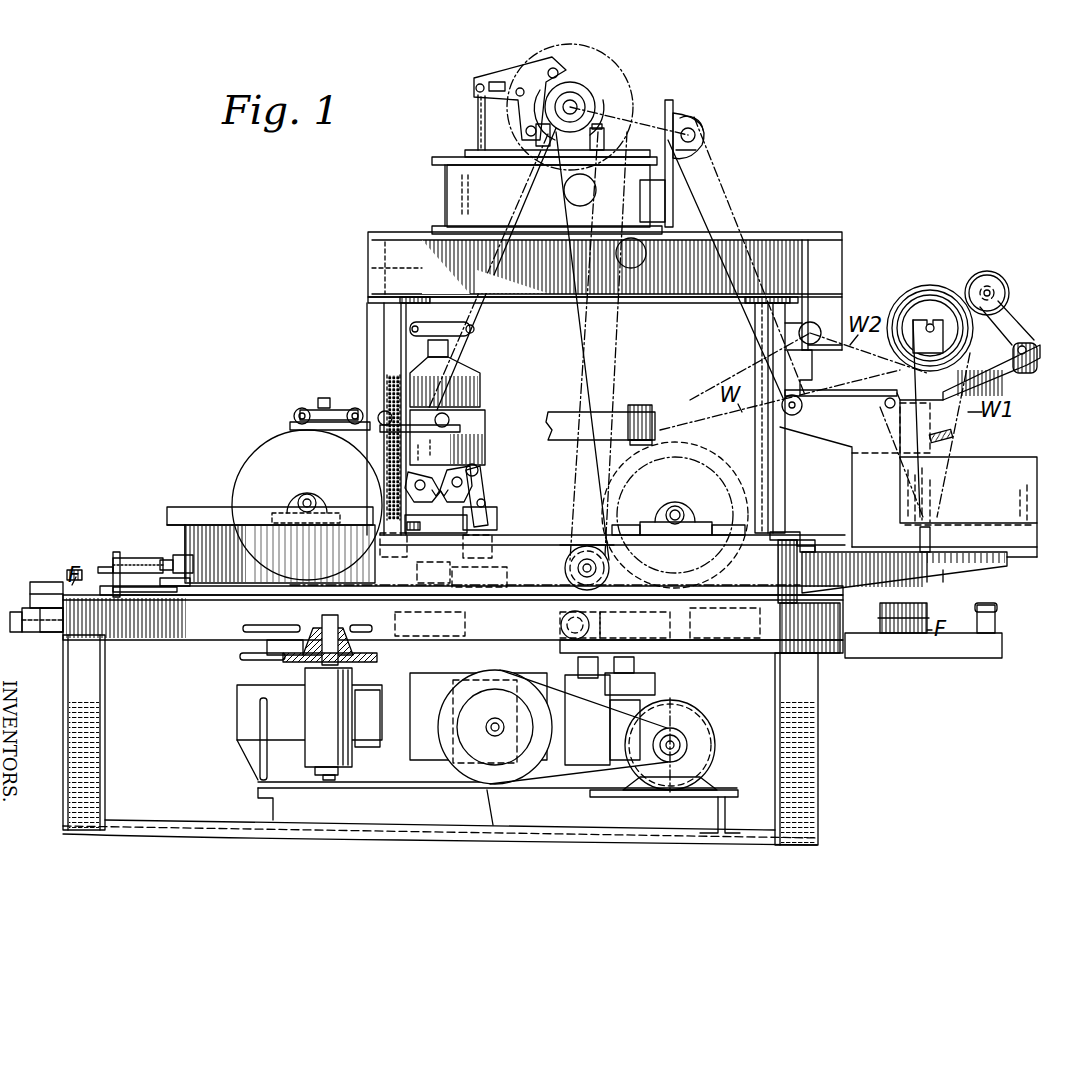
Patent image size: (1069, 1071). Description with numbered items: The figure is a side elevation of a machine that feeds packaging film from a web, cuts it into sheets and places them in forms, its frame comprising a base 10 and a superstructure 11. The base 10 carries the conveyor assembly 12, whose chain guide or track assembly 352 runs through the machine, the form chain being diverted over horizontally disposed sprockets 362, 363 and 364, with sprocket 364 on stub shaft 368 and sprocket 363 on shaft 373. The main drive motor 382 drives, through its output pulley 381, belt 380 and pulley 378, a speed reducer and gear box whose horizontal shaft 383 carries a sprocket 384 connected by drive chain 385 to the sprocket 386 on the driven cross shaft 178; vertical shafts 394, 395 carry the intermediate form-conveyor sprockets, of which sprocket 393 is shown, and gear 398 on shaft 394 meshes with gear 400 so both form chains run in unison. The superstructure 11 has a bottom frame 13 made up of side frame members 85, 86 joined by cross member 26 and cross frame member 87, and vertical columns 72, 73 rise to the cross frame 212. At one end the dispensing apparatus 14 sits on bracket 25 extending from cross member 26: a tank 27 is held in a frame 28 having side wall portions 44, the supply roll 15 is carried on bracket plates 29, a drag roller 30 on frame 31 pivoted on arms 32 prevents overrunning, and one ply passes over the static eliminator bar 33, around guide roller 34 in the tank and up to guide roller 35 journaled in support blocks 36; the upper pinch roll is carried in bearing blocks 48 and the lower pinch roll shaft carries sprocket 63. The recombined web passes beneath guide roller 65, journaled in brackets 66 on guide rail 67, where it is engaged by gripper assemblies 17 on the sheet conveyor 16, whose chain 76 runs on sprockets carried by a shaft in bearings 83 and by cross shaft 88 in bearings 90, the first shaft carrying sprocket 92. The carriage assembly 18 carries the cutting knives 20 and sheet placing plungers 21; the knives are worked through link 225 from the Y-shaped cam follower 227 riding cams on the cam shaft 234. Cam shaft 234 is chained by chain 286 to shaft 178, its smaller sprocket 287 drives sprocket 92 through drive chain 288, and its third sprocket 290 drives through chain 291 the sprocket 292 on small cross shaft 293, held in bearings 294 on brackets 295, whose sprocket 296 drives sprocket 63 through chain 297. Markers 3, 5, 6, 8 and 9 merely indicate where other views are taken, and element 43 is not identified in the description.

The pad 3 is at (928, 610).
The bolt 5 is at (997, 630).
The section line 6 is at (702, 62).
The section line 8 is at (221, 408).
The section line 9 is at (66, 553).
The base 10 is at (820, 690).
The superstructure 11 is at (386, 230).
The conveyor assembly 12 is at (25, 604).
The bottom frame 13 is at (830, 590).
The dispensing apparatus 14 is at (899, 300).
The supply roll 15 is at (924, 300).
The endless conveyor mechanism 16 is at (254, 461).
The web gripper assemblies 17 is at (318, 402).
The carriage assembly 18 is at (498, 487).
The cutting knives 20 is at (490, 412).
The sheet placing plungers 21 is at (452, 577).
The bracket 25 is at (955, 587).
The cross member 26 is at (803, 538).
The tank 27 is at (1021, 460).
The frame 28 is at (1022, 560).
The bracket plates 29 is at (893, 387).
The drag roller 30 is at (981, 282).
The frame 31 is at (1012, 328).
The horizontal arms 32 is at (1003, 374).
The static eliminator bar 33 is at (950, 438).
The guide roller 34 is at (967, 495).
The guide roller 35 is at (898, 434).
The support blocks 36 is at (971, 372).
The roller 43 is at (883, 408).
The side wall portions 44 is at (856, 475).
The bearing forming blocks 48 is at (800, 385).
The sprocket 63 is at (802, 410).
The guide roller 65 is at (652, 418).
The bearing forming brackets 66 is at (640, 405).
The guide rail 67 is at (735, 440).
The vertical column 72 is at (775, 488).
The vertical column 73 is at (393, 320).
The endless chain 76 is at (522, 592).
The bearing 83 is at (695, 510).
The side frame member 85 is at (280, 554).
The side frame member 86 is at (676, 509).
The cross frame member 87 is at (182, 538).
The cross shaft 88 is at (309, 495).
The bearing 90 is at (294, 499).
The sprocket 92 is at (733, 560).
The driven cross shaft 178 is at (598, 572).
The cross frame 212 is at (445, 184).
The link 225 is at (478, 117).
The cam follower 227 is at (500, 82).
The cam shaft 234 is at (571, 105).
The chain 286 is at (582, 368).
The smaller sprocket 287 is at (598, 108).
The drive chain 288 is at (733, 306).
The third sprocket 290 is at (560, 110).
The drive chain 291 is at (648, 102).
The sprocket 292 is at (692, 118).
The small cross shaft 293 is at (700, 139).
The bearings 294 is at (690, 150).
The brackets 295 is at (676, 213).
The sprocket 296 is at (700, 128).
The chain 297 is at (725, 186).
The track assembly 352 is at (53, 632).
The sprocket 362 is at (307, 616).
The sprocket 363 is at (562, 623).
The sprocket 364 is at (725, 623).
The stub shaft 368 is at (690, 676).
The shaft 373 is at (430, 618).
The pulley 378 is at (470, 780).
The belt 380 is at (585, 785).
The output pulley 381 is at (700, 748).
The main drive motor 382 is at (700, 719).
The horizontal shaft 383 is at (487, 722).
The sprocket 384 is at (430, 752).
The drive chain 385 is at (548, 612).
The sprocket 386 is at (577, 547).
The sprocket 393 is at (615, 625).
The shaft 394 is at (310, 632).
The shaft 395 is at (593, 666).
The gear 398 is at (378, 662).
The gear 400 is at (245, 660).